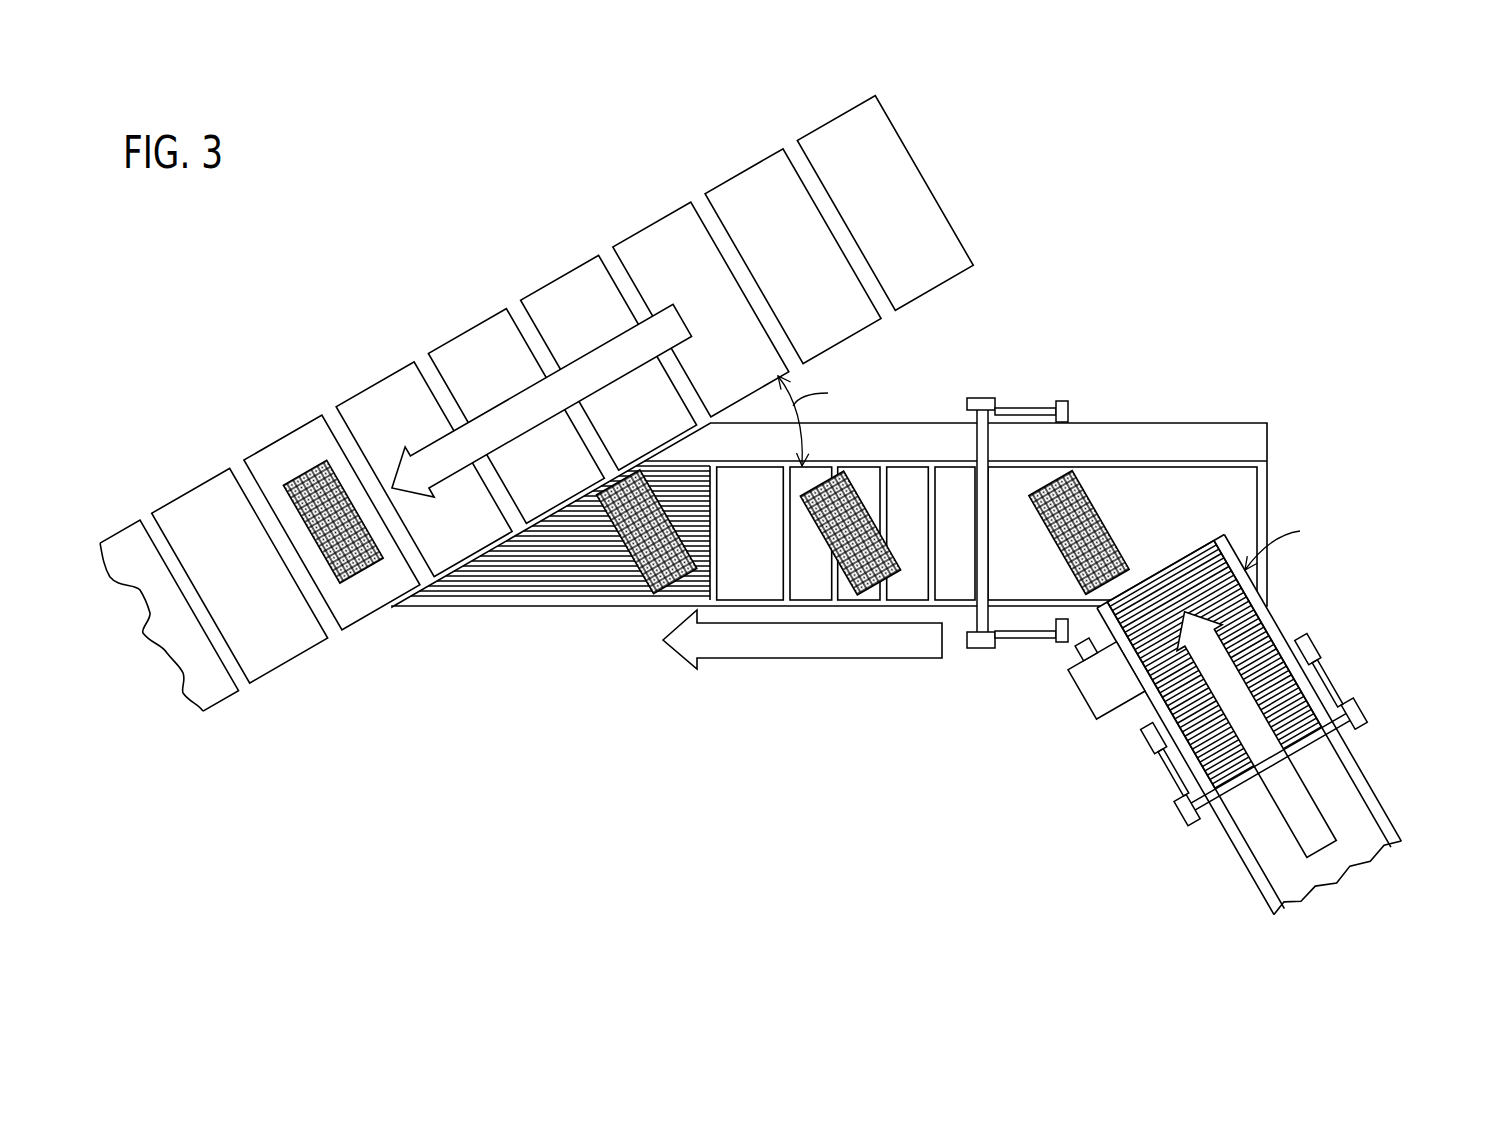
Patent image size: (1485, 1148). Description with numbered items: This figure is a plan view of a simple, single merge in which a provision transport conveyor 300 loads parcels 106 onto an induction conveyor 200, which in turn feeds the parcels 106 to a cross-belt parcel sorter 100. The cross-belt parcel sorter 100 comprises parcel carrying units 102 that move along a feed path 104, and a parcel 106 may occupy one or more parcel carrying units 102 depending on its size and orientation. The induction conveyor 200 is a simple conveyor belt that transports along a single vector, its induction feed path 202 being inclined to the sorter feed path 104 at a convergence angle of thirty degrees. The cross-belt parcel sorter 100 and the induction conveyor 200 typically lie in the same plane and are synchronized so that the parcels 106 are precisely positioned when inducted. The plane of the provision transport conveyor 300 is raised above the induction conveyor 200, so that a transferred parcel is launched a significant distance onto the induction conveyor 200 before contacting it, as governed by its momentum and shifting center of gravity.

The cross-belt parcel sorter 100 is at (433, 322).
The parcel carrying units 102 is at (205, 520).
The feed path 104 is at (439, 462).
The parcels 106 is at (307, 483).
The induction conveyor 200 is at (1217, 417).
The induction feed path 202 is at (820, 659).
The provision transport conveyor 300 is at (1373, 777).